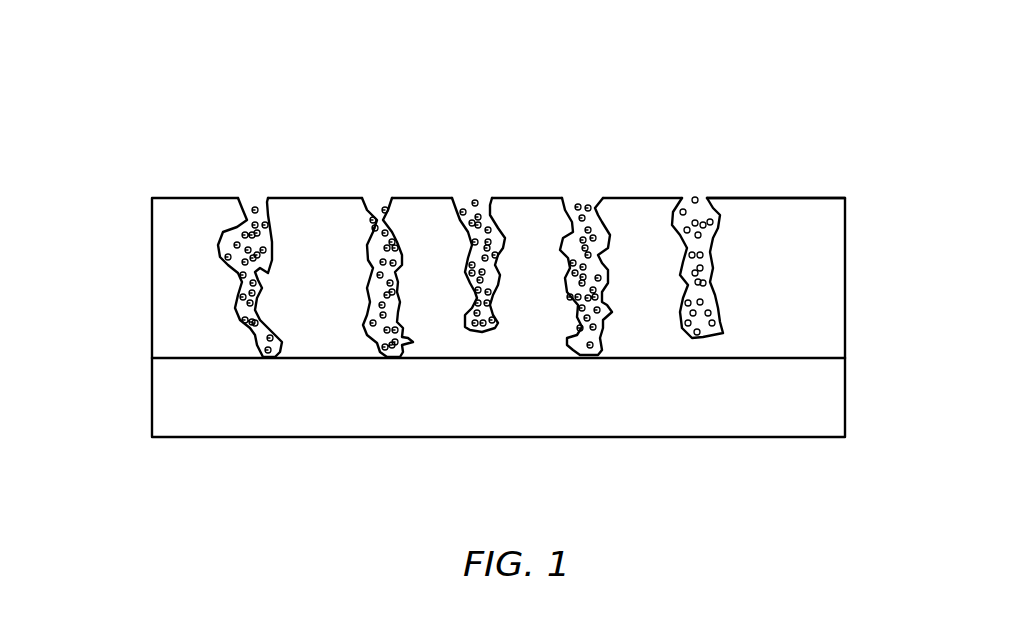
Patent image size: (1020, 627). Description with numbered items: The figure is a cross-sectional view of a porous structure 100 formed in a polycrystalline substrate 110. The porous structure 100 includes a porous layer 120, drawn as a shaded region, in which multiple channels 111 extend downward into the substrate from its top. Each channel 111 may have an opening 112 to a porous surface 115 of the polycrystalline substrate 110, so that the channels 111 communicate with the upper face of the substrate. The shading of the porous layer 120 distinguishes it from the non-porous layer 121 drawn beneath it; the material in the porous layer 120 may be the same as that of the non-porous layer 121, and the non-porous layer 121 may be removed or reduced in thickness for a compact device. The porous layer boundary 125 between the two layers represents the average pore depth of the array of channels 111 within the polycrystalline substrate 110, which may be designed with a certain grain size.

The porous structure 100 is at (800, 109).
The polycrystalline substrate 110 is at (128, 198).
The channels 111 is at (370, 347).
The opening 112 is at (582, 198).
The porous surface 115 is at (750, 201).
The porous layer 120 is at (205, 342).
The non-porous layer 121 is at (205, 422).
The porous layer boundary 125 is at (738, 359).